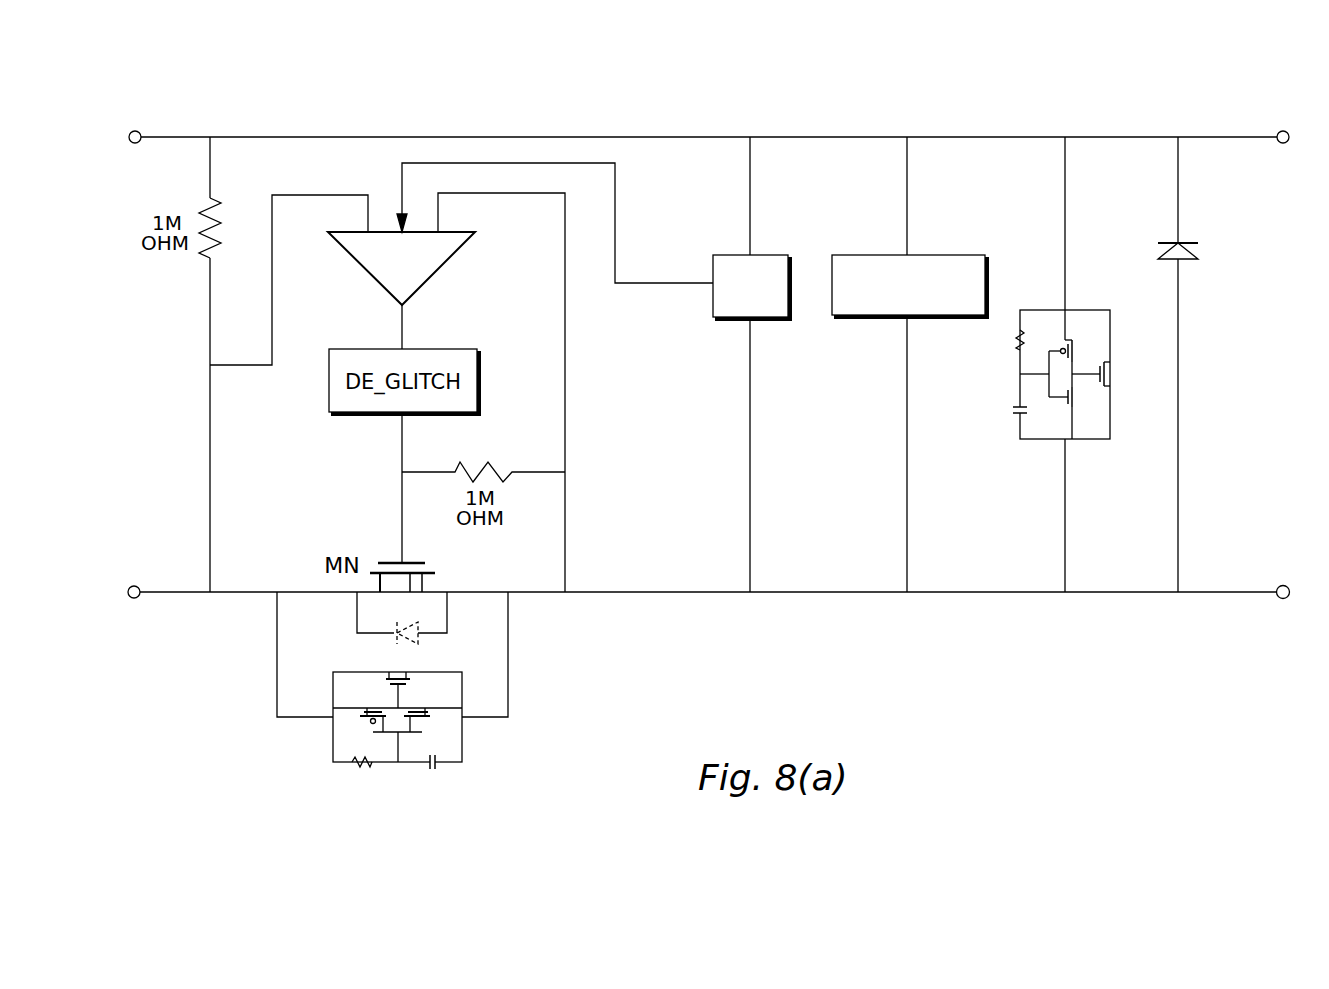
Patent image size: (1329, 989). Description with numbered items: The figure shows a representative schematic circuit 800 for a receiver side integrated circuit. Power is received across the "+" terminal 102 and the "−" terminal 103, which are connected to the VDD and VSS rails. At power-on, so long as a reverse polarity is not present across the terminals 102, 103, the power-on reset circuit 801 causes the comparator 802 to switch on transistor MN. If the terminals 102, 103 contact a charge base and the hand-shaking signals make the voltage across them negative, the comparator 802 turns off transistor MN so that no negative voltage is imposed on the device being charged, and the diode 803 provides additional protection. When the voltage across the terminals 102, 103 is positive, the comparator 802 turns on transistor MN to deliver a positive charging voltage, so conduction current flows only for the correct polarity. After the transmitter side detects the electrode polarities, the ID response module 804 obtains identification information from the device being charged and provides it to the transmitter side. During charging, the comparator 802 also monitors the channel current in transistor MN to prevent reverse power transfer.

The schematic circuit 800 is at (731, 51).
The terminal 102 is at (135, 131).
The terminal 103 is at (134, 586).
The comparator 802 is at (457, 255).
The power-on reset circuit 801 is at (759, 318).
The ID response module 804 is at (936, 316).
The diode 803 is at (1186, 260).